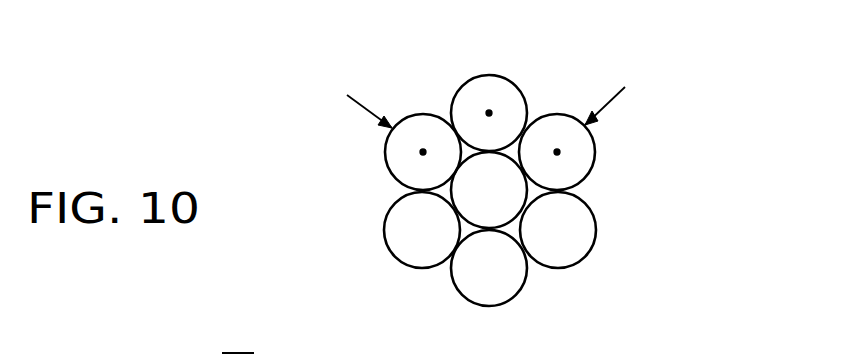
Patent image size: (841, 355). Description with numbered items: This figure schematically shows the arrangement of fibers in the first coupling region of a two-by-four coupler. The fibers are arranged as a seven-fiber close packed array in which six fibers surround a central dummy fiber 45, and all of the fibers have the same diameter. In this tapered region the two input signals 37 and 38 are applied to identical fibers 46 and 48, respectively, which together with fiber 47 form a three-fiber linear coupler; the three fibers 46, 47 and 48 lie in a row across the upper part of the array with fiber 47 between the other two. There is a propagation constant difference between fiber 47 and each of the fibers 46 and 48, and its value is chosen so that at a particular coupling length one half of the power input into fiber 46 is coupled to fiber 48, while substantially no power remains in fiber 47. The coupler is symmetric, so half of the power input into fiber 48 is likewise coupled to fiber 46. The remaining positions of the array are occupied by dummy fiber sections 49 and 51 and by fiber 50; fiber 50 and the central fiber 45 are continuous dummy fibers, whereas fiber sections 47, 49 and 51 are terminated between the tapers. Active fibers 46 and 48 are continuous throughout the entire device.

The input signal 37 is at (358, 112).
The input signal 38 is at (615, 97).
The central dummy fiber 45 is at (467, 200).
The active fiber 46 is at (393, 124).
The fiber 47 is at (504, 76).
The active fiber 48 is at (543, 116).
The dummy fiber section 49 is at (592, 212).
The dummy fiber 50 is at (488, 306).
The dummy fiber section 51 is at (387, 246).